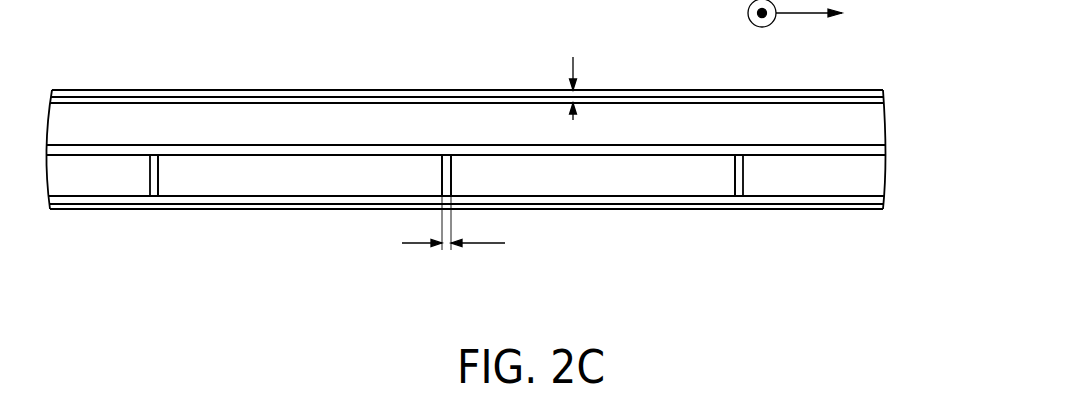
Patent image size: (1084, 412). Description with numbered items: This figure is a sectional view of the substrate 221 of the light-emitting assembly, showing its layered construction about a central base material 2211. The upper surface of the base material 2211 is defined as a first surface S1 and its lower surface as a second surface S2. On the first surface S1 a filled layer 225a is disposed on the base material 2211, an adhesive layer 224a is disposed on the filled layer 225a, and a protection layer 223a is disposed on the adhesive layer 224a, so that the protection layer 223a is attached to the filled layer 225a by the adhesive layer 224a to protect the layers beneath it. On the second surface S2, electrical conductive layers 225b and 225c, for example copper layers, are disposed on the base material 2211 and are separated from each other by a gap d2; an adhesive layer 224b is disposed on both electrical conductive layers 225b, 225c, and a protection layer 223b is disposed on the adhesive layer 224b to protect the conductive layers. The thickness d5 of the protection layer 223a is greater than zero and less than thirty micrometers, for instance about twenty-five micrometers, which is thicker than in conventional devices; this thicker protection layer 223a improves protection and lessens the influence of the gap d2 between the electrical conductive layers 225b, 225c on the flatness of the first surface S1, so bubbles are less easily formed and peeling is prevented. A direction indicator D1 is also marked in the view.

The substrate 221 is at (133, 90).
The protection layer 223a is at (877, 92).
The adhesive layer 224a is at (880, 98).
The filled layer 225a is at (875, 127).
The base material 2211 is at (876, 150).
The electrical conductive layer 225b is at (308, 182).
The electrical conductive layer 225c is at (680, 182).
The adhesive layer 224b is at (880, 199).
The protection layer 223b is at (872, 207).
The first surface S1 is at (298, 78).
The second surface S2 is at (198, 222).
The thickness d5 is at (582, 57).
The gap d2 is at (453, 223).
The direction D1 is at (812, 13).